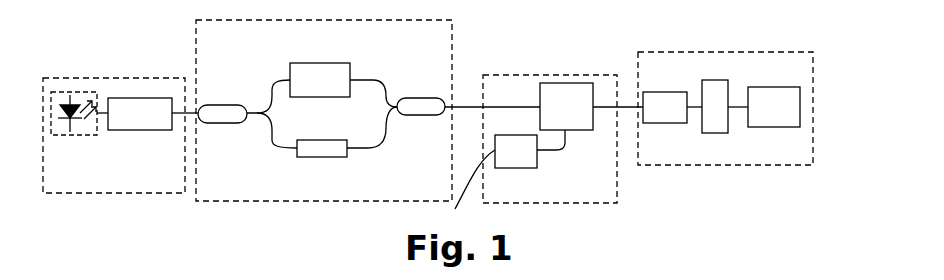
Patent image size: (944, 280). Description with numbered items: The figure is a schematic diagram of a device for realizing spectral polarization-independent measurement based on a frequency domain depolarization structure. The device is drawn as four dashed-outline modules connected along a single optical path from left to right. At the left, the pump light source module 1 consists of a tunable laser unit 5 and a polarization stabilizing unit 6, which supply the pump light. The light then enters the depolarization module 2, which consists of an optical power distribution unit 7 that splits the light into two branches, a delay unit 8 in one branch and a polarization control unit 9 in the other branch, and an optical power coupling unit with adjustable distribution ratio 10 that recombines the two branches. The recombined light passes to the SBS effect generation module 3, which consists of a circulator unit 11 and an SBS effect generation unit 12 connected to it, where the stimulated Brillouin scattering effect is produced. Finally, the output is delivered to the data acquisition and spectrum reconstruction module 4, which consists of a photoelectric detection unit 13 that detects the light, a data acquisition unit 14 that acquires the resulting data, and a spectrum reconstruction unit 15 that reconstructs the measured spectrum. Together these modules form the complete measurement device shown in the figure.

The pump light source module 1 is at (112, 78).
The depolarization module 2 is at (453, 63).
The SBS effect generation module 3 is at (540, 75).
The data acquisition and spectrum reconstruction module 4 is at (725, 165).
The tunable laser unit 5 is at (78, 138).
The polarization stabilizing unit 6 is at (140, 130).
The optical power distribution unit 7 is at (224, 105).
The delay unit 8 is at (322, 63).
The polarization control unit 9 is at (323, 157).
The optical power coupling unit with adjustable distribution ratio 10 is at (418, 113).
The circulator unit 11 is at (577, 130).
The SBS effect generation unit 12 is at (515, 168).
The photoelectric detection unit 13 is at (665, 123).
The data acquisition unit 14 is at (720, 80).
The spectrum reconstruction unit 15 is at (775, 127).